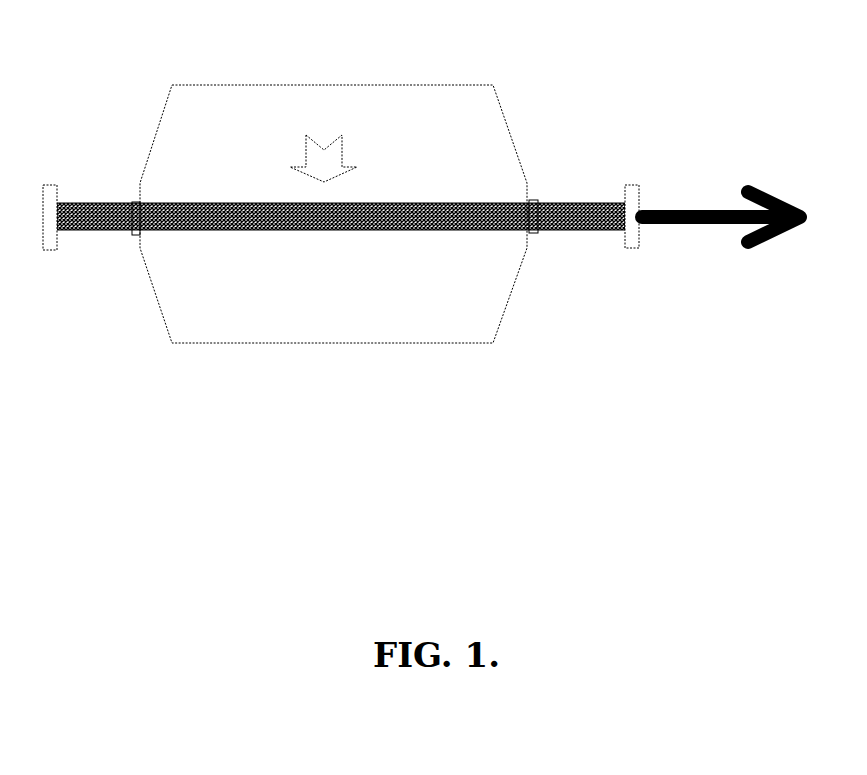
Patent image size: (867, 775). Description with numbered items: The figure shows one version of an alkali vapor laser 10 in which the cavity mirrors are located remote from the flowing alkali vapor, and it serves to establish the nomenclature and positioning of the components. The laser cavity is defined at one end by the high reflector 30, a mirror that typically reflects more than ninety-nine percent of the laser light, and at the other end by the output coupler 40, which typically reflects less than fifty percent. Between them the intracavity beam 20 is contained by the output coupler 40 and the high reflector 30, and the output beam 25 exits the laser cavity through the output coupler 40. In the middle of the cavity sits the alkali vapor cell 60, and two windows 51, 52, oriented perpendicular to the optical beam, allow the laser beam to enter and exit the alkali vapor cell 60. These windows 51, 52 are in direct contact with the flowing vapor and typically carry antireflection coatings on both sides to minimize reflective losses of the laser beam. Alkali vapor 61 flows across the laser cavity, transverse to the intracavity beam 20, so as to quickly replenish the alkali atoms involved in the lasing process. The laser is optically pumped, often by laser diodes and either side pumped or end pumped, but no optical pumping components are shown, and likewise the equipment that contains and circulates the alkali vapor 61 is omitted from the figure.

The alkali vapor laser 10 is at (345, 408).
The intracavity beam 20 is at (238, 235).
The output beam 25 is at (720, 248).
The high reflector 30 is at (55, 173).
The output coupler 40 is at (637, 177).
The window 51 is at (133, 243).
The window 52 is at (540, 193).
The alkali vapor cell 60 is at (508, 335).
The alkali vapor 61 is at (327, 132).